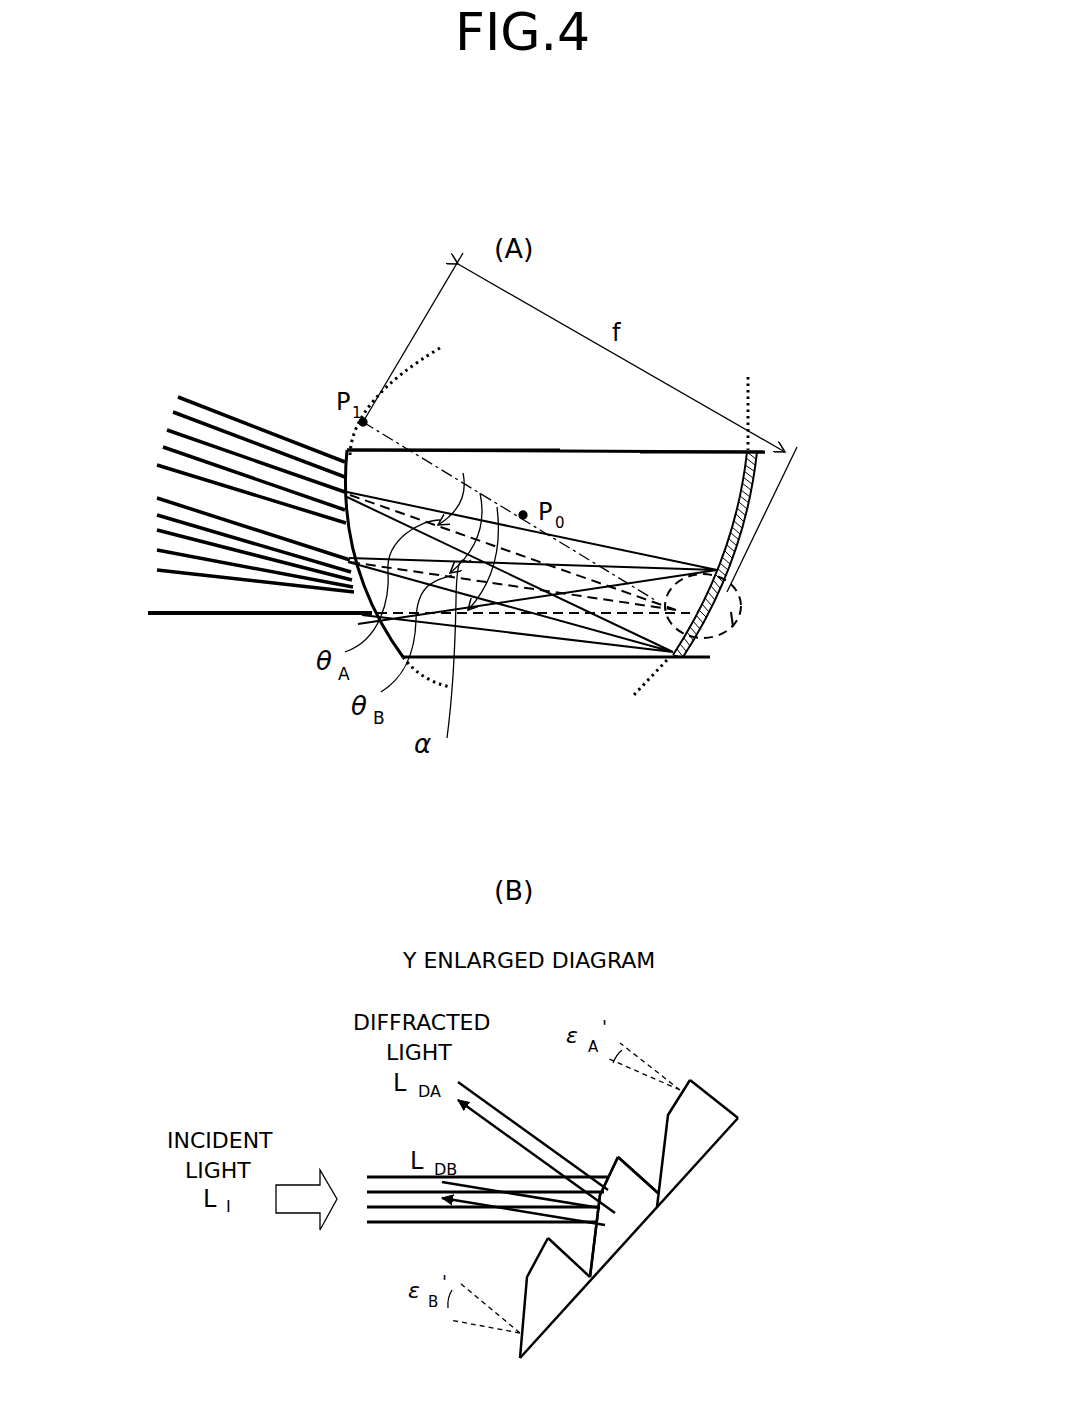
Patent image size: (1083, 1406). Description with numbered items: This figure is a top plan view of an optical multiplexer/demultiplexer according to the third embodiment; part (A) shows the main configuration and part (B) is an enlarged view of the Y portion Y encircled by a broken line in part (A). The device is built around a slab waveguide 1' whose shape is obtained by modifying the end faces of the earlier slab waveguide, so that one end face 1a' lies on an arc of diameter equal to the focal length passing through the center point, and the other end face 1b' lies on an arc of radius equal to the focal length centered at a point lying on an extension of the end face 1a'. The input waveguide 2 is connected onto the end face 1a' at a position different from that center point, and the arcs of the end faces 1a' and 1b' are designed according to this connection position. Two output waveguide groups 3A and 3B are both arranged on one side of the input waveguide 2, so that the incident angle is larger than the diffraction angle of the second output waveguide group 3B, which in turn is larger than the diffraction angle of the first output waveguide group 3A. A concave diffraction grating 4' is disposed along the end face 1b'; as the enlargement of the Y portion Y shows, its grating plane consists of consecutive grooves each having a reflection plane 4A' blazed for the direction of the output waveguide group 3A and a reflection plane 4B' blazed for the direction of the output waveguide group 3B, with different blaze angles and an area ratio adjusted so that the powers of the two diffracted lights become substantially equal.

The slab waveguide 1' is at (555, 571).
The end face 1a' is at (453, 433).
The end face 1b' is at (702, 468).
The input waveguide 2 is at (177, 615).
The output waveguide group 3A is at (235, 497).
The output waveguide group 3B is at (235, 497).
The concave diffraction grating 4' is at (688, 867).
The reflection plane 4A' is at (586, 1125).
The reflection plane 4B' is at (541, 1217).
The Y portion Y is at (732, 618).